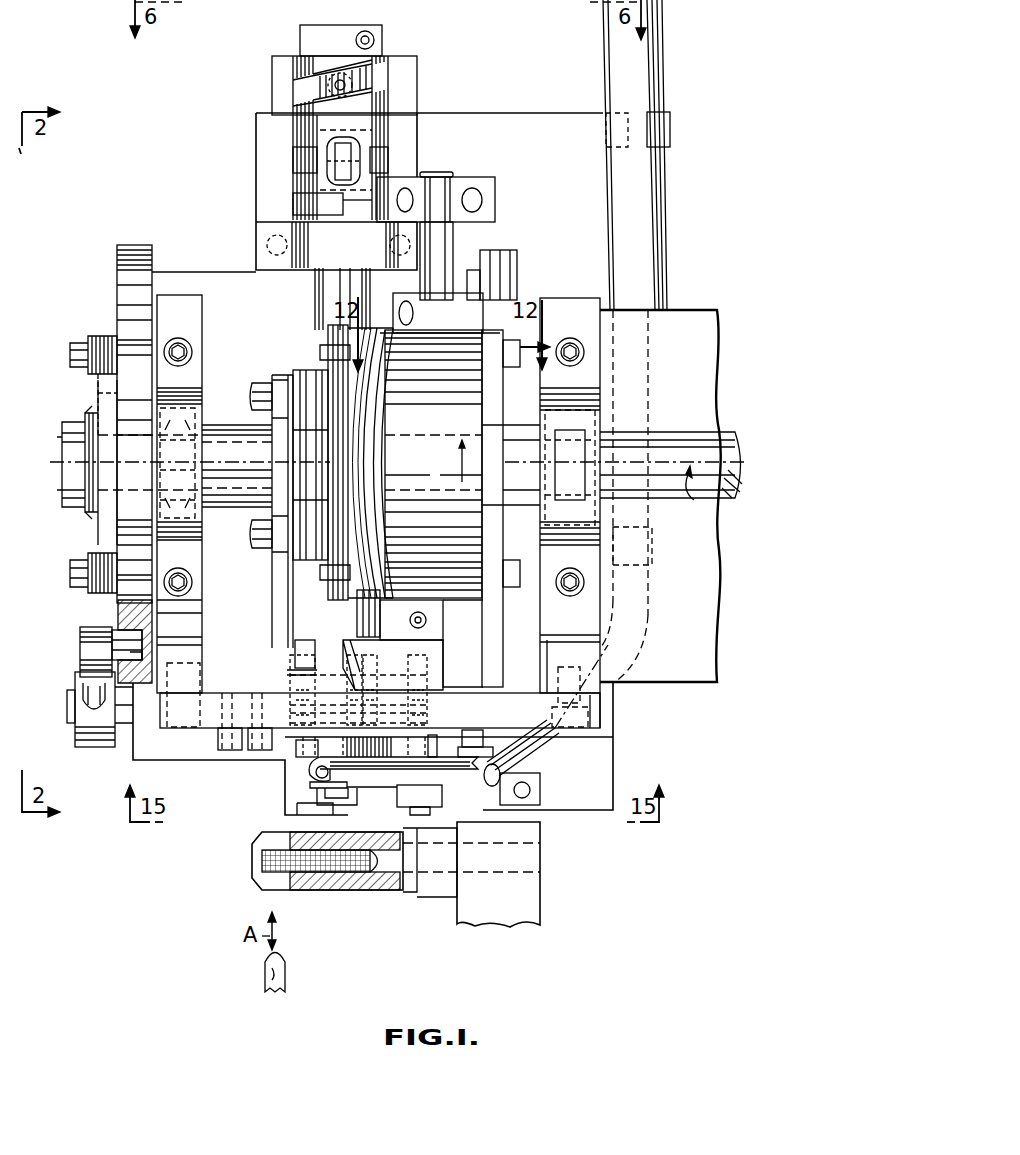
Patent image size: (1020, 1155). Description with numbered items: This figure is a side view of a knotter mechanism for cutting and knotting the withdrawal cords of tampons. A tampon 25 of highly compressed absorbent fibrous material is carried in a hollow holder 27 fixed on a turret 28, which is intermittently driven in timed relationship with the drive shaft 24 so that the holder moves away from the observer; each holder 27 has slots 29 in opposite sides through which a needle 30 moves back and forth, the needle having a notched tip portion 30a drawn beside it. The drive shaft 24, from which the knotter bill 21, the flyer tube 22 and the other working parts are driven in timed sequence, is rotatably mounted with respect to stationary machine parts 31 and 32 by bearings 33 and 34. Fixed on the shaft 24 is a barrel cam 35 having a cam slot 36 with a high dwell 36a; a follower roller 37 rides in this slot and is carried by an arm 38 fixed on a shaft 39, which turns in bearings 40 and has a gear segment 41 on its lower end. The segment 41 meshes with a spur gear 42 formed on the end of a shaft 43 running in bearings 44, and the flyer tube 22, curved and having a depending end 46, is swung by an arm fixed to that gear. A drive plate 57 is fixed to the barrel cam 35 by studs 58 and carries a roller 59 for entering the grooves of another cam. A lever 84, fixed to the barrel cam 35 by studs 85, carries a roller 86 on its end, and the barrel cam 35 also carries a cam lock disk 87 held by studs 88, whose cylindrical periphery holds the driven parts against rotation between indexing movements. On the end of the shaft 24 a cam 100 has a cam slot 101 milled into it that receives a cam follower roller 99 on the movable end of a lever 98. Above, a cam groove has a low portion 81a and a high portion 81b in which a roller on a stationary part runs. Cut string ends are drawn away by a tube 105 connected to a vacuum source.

The low portion 81a is at (292, 96).
The high portion 81b is at (417, 90).
The cam 100 is at (124, 243).
The roller 59 is at (471, 268).
The studs 88 is at (308, 356).
The stationary machine part 32 is at (190, 380).
The bearing 34 is at (192, 420).
The cam slot 36 is at (383, 378).
The high dwell 36a is at (378, 447).
The barrel cam 35 is at (446, 467).
The drive plate 57 is at (496, 397).
The studs 58 is at (511, 368).
The stationary machine part 31 is at (603, 381).
The bearing 33 is at (599, 419).
The drive shaft 24 is at (725, 432).
The cam lock disk 87 is at (341, 448).
The studs 85 is at (256, 541).
The lever 84 is at (274, 575).
The cam follower roller 99 is at (116, 626).
The cam slot 101 is at (110, 661).
The lever 98 is at (88, 691).
The follower roller 37 is at (379, 601).
The arm 38 is at (445, 619).
The roller 86 is at (307, 640).
The bearings 44 is at (350, 665).
The bearings 40 is at (431, 661).
The shaft 43 is at (286, 681).
The shaft 39 is at (429, 691).
The spur gear 42 is at (306, 750).
The depending end 46 is at (312, 784).
The gear segment 41 is at (388, 762).
The knotter bill 21 is at (341, 811).
The flyer tube 22 is at (399, 778).
The tube 105 is at (526, 748).
The slots 29 is at (268, 881).
The tampon 25 is at (340, 889).
The hollow holder 27 is at (401, 891).
The turret 28 is at (541, 901).
The needle 30 is at (284, 963).
The notch 30a is at (276, 975).